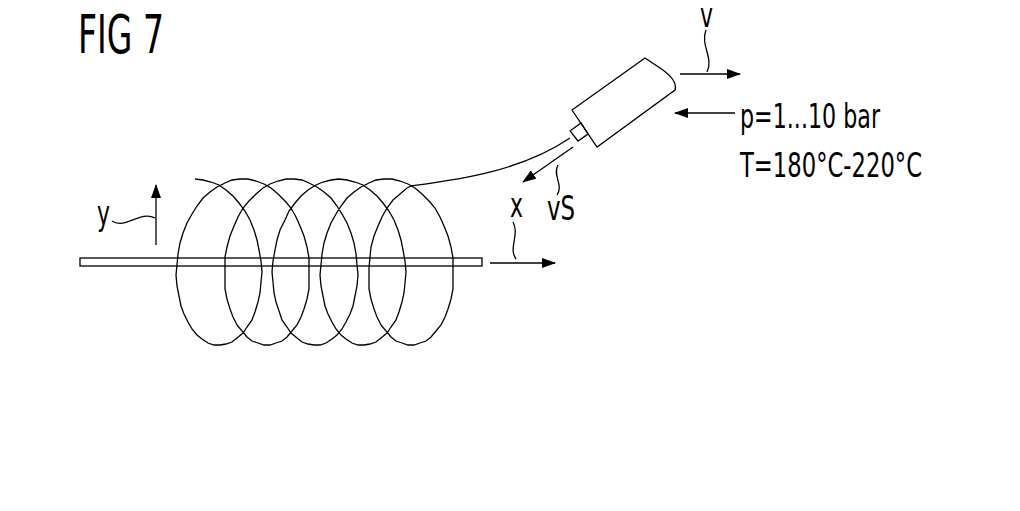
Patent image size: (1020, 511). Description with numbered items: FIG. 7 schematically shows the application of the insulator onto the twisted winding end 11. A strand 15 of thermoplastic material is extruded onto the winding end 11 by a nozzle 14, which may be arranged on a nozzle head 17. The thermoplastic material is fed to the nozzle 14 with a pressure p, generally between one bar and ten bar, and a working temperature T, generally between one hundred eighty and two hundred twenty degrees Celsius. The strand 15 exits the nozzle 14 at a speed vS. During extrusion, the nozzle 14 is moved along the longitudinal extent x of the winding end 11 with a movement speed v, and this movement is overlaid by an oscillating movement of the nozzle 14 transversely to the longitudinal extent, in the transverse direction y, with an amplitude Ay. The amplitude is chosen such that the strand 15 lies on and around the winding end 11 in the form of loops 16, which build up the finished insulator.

The winding end 11 is at (97, 268).
The nozzle 14 is at (562, 116).
The strand 15 is at (453, 177).
The loops 16 is at (255, 178).
The nozzle head 17 is at (607, 82).